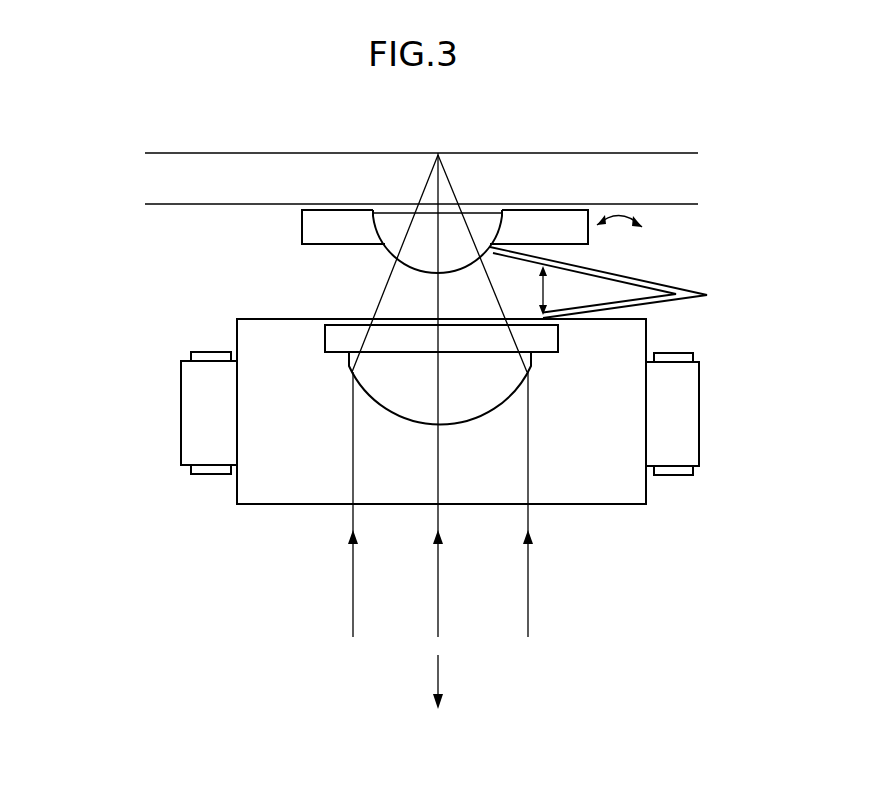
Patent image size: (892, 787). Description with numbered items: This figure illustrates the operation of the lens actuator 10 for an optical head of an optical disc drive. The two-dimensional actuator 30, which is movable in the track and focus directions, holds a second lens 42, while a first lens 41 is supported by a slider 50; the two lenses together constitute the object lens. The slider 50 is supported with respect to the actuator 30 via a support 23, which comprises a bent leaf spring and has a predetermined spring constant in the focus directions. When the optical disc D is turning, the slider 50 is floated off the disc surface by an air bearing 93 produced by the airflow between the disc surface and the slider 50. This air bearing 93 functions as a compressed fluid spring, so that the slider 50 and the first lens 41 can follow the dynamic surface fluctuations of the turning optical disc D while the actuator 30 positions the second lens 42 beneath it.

The lens actuator 10 is at (377, 402).
The support 23 is at (652, 282).
The two-dimensional actuator 30 is at (600, 487).
The first lens 41 is at (490, 218).
The second lens 42 is at (503, 407).
The slider 50 is at (568, 217).
The air bearing 93 is at (357, 208).
The optical disc D is at (652, 162).